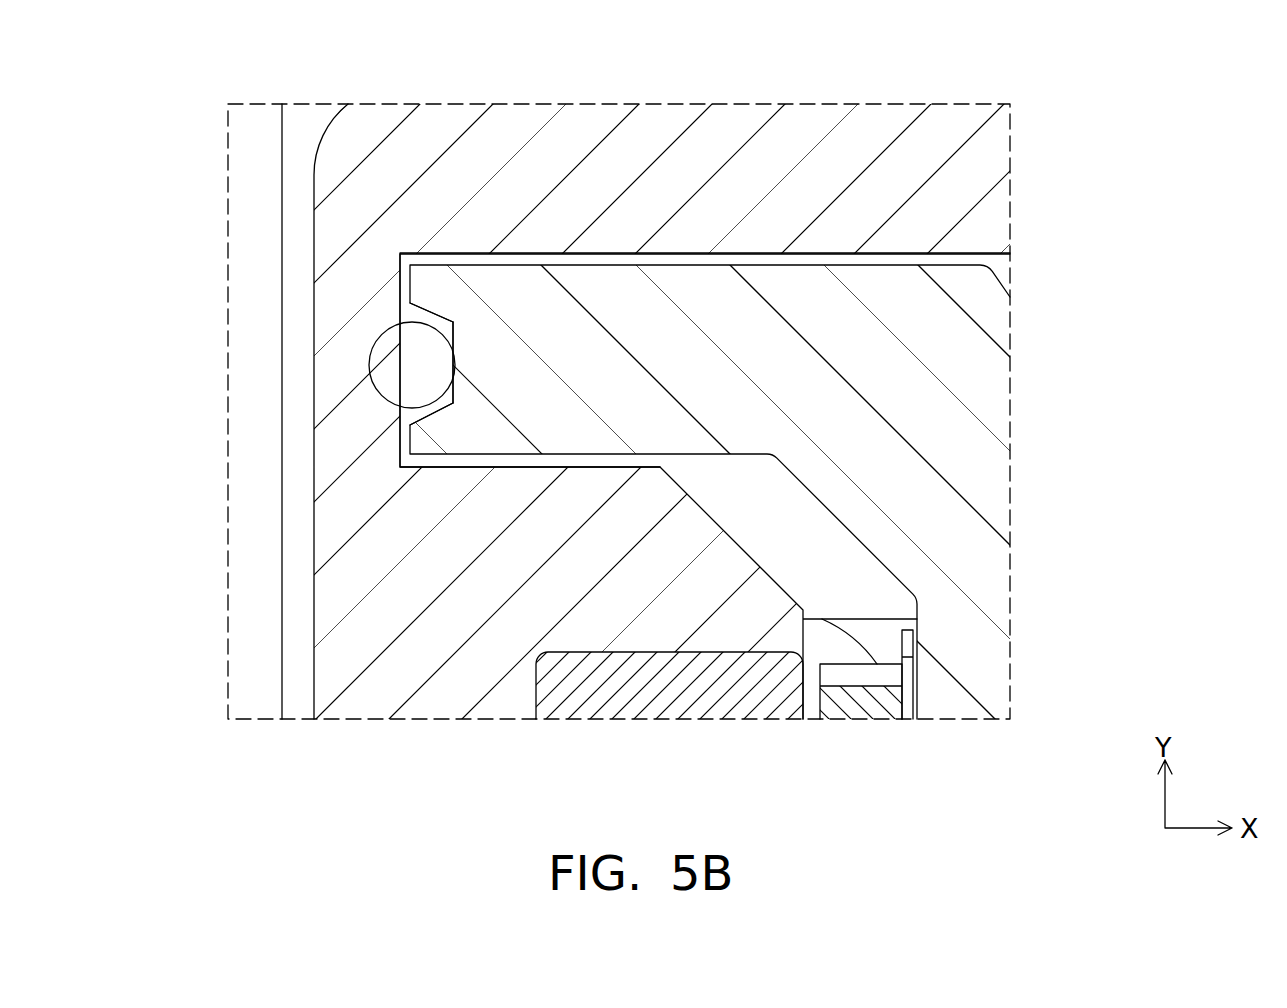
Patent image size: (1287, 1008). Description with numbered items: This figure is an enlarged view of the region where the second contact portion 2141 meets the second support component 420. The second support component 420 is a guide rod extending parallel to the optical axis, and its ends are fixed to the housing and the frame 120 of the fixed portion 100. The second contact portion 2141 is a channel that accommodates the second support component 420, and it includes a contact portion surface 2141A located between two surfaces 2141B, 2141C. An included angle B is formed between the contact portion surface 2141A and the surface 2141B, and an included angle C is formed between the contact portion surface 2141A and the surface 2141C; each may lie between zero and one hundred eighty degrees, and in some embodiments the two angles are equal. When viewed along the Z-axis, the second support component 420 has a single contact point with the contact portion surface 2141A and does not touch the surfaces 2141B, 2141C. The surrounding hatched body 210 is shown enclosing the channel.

The fixed portion 100 is at (643, 375).
The frame 120 is at (884, 122).
The base 210 is at (964, 360).
The second contact portion 2141 is at (470, 367).
The contact portion surface 2141A is at (457, 345).
The surface 2141B is at (430, 416).
The surface 2141C is at (432, 311).
The second support component 420 is at (393, 353).